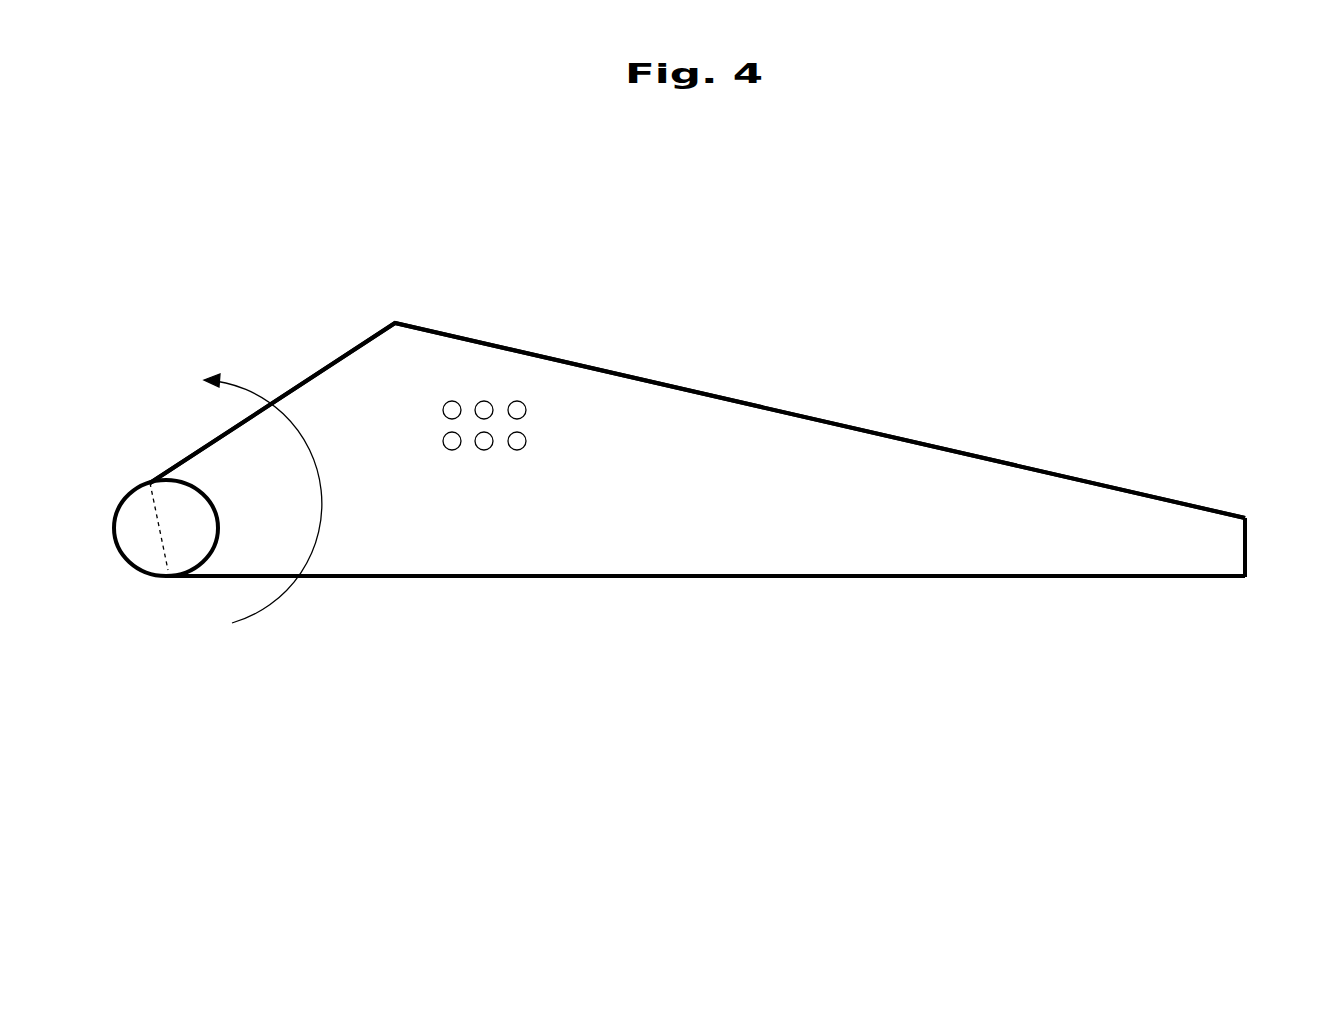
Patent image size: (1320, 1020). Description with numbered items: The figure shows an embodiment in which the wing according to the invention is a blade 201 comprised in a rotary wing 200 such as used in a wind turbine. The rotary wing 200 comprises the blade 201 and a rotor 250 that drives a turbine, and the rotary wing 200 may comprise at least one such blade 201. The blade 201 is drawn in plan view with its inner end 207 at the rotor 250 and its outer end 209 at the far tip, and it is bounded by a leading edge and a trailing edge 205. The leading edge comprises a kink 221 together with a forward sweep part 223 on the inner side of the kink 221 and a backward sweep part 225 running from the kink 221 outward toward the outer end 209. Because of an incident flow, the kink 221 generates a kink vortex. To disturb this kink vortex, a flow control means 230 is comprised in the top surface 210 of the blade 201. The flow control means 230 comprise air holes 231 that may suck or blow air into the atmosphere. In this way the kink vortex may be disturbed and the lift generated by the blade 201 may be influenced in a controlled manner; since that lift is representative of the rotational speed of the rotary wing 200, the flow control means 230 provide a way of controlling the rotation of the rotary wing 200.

The rotary wing 200 is at (708, 493).
The blade 201 is at (727, 439).
The trailing edge 205 is at (802, 575).
The inner end 207 is at (163, 524).
The outer end 209 is at (1245, 550).
The top surface 210 is at (577, 525).
The kink 221 is at (395, 323).
The forward sweep part 223 is at (322, 367).
The backward sweep part 225 is at (660, 383).
The flow control means 230 is at (473, 552).
The air holes 231 is at (426, 562).
The rotor 250 is at (217, 538).